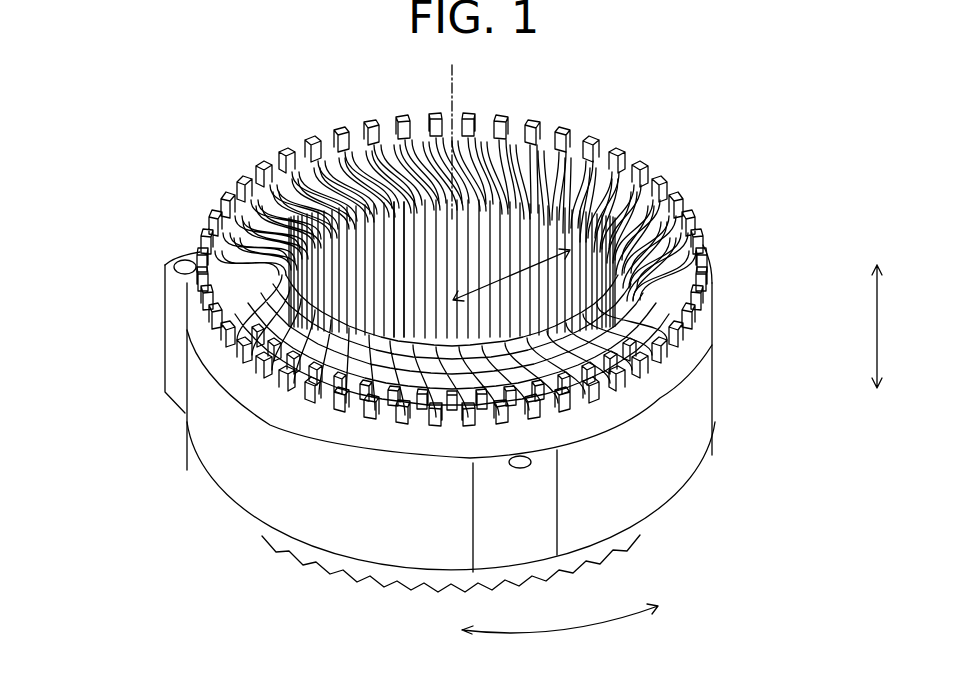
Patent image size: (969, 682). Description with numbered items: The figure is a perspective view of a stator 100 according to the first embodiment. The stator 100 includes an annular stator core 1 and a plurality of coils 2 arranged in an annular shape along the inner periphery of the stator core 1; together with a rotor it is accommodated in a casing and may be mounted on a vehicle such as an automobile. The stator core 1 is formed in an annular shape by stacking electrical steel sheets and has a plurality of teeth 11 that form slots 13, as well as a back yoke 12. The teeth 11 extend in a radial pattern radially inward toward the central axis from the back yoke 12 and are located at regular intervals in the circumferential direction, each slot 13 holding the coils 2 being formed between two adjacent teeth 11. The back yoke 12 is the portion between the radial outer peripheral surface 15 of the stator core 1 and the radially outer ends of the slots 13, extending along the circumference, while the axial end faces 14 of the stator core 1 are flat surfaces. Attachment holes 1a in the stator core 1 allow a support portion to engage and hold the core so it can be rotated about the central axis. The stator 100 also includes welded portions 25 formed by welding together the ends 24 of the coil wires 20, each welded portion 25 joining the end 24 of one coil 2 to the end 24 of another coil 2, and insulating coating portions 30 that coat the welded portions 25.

The stator 100 is at (160, 131).
The stator core 1 is at (159, 287).
The attachment hole 1a is at (187, 253).
The coil 2 is at (321, 134).
The tooth 11 is at (430, 207).
The slot 13 is at (400, 205).
The back yoke 12 is at (675, 466).
The axial end face 14 is at (690, 352).
The outer peripheral surface 15 is at (690, 420).
The coil wire 20 is at (640, 160).
The end 24 is at (681, 180).
The welded portion 25 is at (524, 264).
The insulating coating portion 30 is at (700, 260).